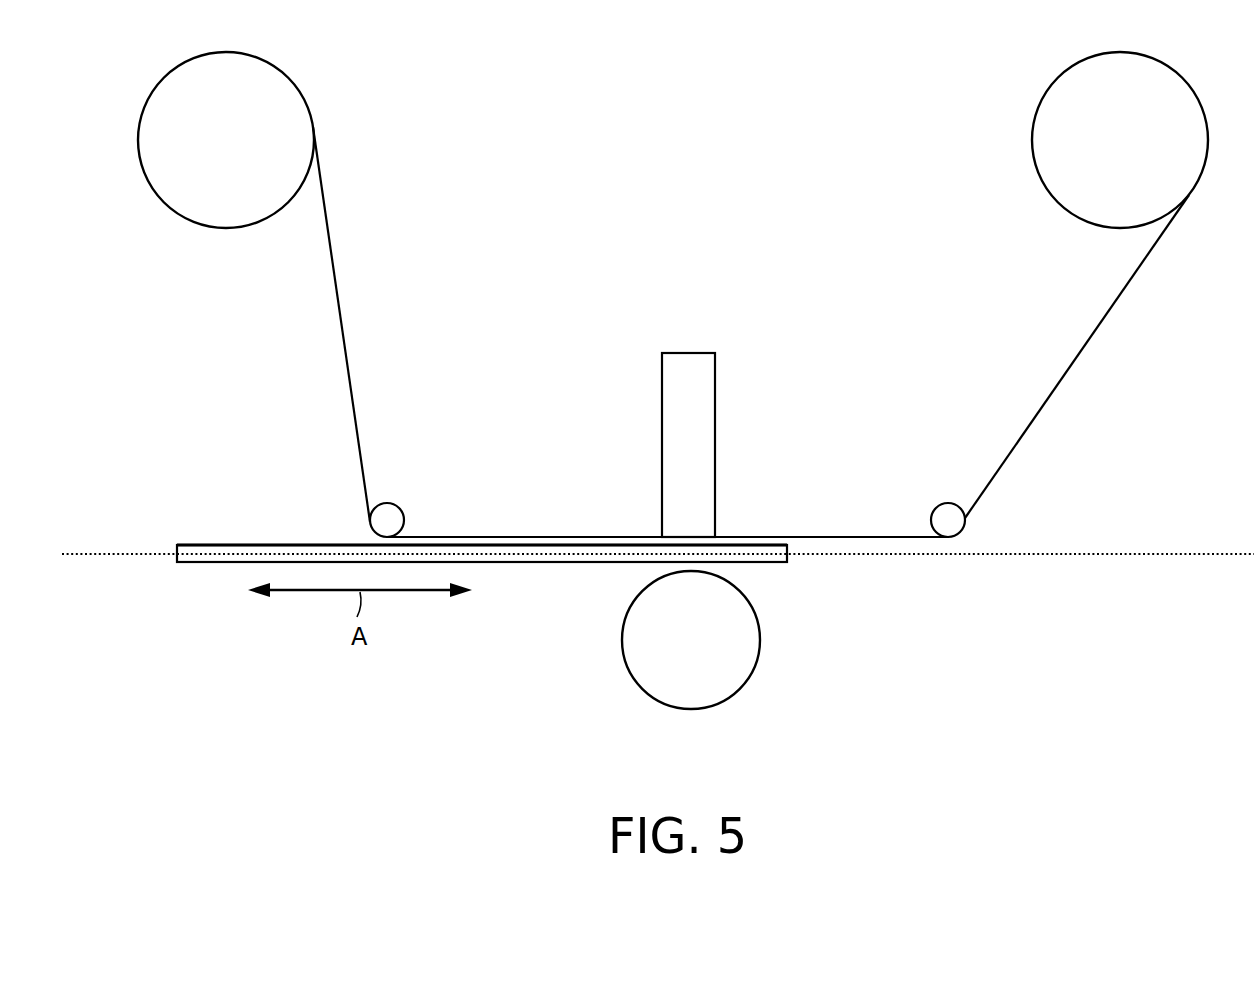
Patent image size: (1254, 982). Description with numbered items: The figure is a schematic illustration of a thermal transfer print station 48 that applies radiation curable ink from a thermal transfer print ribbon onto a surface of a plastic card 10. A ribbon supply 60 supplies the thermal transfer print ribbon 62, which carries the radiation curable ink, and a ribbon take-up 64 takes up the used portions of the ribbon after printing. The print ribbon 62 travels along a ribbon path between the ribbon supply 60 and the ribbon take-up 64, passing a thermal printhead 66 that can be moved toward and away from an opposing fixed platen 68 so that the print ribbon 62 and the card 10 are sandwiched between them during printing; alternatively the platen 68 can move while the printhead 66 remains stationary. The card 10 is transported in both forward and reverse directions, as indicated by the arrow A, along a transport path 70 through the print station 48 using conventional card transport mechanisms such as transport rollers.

The plastic card 10 is at (205, 564).
The thermal transfer print station 48 is at (806, 67).
The ribbon supply 60 is at (173, 67).
The thermal transfer print ribbon 62 is at (342, 316).
The ribbon take-up 64 is at (1166, 60).
The thermal printhead 66 is at (690, 353).
The fixed platen 68 is at (760, 640).
The transport path 70 is at (1151, 557).